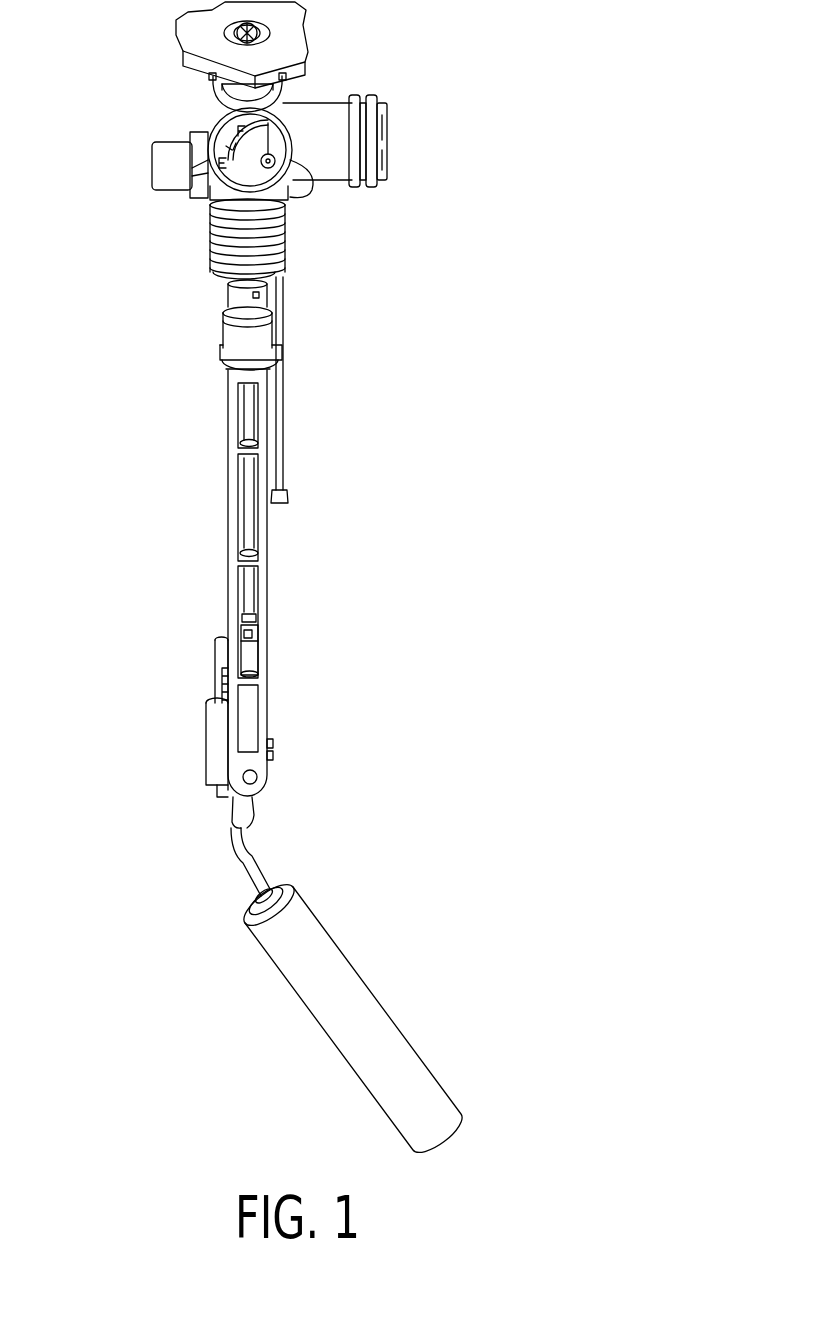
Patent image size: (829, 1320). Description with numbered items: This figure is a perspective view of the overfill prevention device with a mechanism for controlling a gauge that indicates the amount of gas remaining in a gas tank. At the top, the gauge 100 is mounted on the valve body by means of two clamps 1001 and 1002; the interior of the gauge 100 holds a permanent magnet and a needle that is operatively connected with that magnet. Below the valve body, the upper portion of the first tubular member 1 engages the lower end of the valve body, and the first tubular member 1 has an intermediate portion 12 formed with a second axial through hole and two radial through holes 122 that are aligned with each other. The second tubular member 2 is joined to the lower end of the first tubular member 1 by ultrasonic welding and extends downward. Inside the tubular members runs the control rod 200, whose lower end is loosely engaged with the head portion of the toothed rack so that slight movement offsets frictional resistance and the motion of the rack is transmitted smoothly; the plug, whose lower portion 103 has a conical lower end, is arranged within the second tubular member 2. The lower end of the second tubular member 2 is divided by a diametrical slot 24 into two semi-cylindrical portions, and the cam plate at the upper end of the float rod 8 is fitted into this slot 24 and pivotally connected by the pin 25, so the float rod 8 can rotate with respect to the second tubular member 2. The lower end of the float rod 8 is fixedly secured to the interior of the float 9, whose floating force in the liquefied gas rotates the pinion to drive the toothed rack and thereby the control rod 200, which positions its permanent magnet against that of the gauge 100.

The first tubular member 1 is at (228, 287).
The second tubular member 2 is at (226, 367).
The float rod 8 is at (229, 860).
The float 9 is at (328, 1002).
The intermediate portion 12 is at (265, 327).
The diametrical slot 24 is at (262, 762).
The pin 25 is at (243, 778).
The gauge 100 is at (280, 158).
The lower portion 103 is at (252, 657).
The radial through holes 122 is at (259, 296).
The control rod 200 is at (247, 493).
The clamp 1001 is at (218, 84).
The clamp 1002 is at (205, 150).